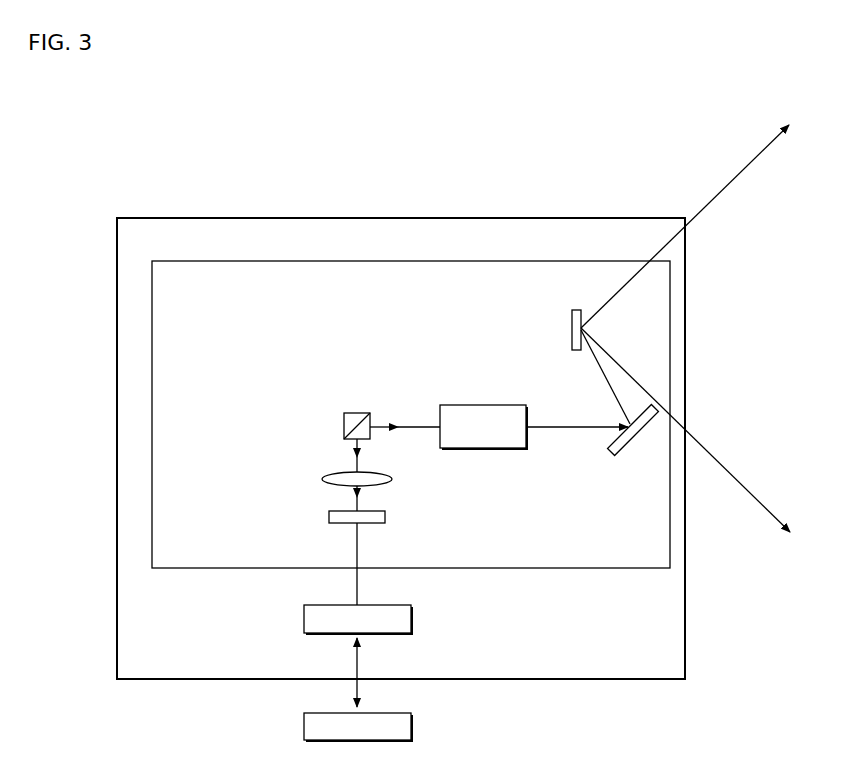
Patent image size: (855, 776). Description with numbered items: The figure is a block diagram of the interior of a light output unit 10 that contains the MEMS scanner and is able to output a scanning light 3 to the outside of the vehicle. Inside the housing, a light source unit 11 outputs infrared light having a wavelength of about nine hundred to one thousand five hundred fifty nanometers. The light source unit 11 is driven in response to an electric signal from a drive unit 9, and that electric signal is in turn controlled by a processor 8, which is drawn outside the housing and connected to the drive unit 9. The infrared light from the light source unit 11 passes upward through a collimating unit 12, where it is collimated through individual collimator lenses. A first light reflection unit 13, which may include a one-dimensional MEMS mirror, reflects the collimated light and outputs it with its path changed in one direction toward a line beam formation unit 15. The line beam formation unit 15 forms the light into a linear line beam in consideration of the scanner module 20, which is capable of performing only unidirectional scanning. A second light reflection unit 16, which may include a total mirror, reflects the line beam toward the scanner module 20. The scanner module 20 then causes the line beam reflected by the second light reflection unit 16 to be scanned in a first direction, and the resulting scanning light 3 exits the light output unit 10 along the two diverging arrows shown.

The scanning light 3 is at (685, 328).
The processor 8 is at (413, 727).
The drive unit 9 is at (413, 619).
The light output unit 10 is at (381, 261).
The light source unit 11 is at (329, 518).
The collimating unit 12 is at (324, 481).
The first light reflection unit 13 is at (344, 428).
The line beam formation unit 15 is at (481, 405).
The second light reflection unit 16 is at (625, 446).
The scanner module 20 is at (572, 325).